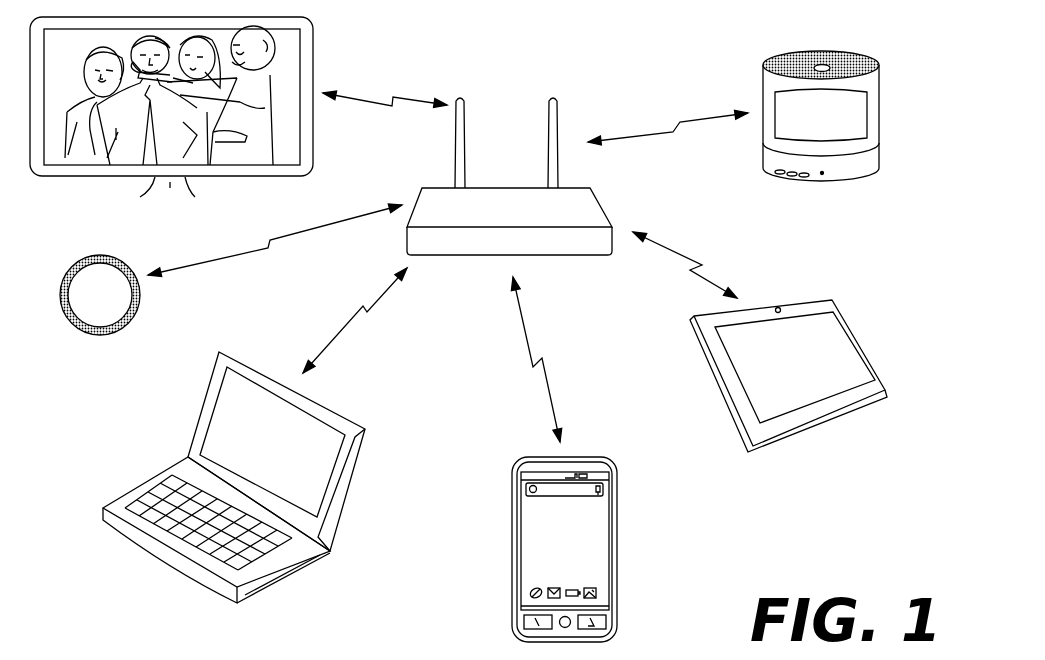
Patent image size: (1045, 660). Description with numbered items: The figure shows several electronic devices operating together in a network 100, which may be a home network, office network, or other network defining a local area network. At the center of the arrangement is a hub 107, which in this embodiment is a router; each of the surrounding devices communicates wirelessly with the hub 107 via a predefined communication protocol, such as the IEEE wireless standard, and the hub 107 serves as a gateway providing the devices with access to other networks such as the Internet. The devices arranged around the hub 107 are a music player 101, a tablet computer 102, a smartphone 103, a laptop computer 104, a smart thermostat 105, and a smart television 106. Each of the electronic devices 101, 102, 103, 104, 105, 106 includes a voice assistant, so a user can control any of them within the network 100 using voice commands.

The network 100 is at (912, 277).
The music player 101 is at (880, 100).
The tablet computer 102 is at (868, 353).
The smartphone 103 is at (617, 518).
The laptop computer 104 is at (358, 462).
The smart thermostat 105 is at (140, 295).
The smart television 106 is at (312, 60).
The hub 107 is at (517, 193).